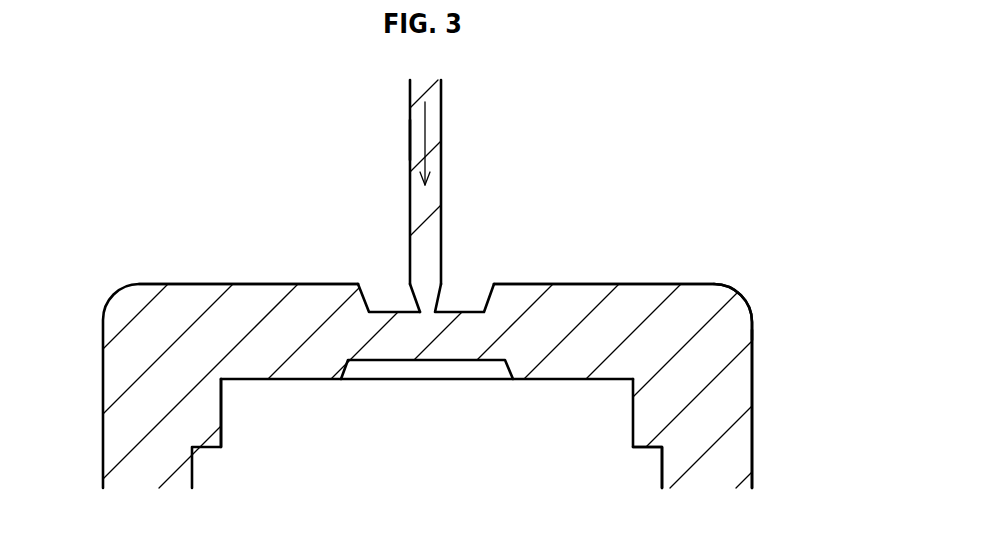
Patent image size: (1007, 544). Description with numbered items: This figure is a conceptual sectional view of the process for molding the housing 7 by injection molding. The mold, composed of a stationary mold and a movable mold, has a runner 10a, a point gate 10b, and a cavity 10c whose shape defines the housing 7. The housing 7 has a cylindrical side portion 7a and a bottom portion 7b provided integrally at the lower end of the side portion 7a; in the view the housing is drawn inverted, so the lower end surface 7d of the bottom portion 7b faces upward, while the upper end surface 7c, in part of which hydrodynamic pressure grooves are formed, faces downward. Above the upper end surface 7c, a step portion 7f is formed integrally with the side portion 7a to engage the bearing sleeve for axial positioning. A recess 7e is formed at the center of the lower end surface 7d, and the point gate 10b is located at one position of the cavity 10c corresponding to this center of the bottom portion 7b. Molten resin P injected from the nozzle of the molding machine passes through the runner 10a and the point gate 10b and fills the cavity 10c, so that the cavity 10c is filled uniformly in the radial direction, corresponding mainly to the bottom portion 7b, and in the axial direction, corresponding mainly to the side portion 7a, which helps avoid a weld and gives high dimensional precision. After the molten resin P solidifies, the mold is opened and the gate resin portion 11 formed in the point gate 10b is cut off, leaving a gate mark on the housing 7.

The housing 7 is at (146, 395).
The side portion 7a is at (715, 460).
The bottom portion 7b is at (582, 338).
The upper end surface 7c is at (253, 380).
The lower end surface 7d is at (258, 284).
The recess 7e is at (383, 310).
The step portion 7f is at (640, 447).
The runner 10a is at (410, 131).
The point gate 10b is at (418, 296).
The cavity 10c is at (755, 326).
The gate resin portion 11 is at (427, 197).
The molten resin P is at (427, 119).